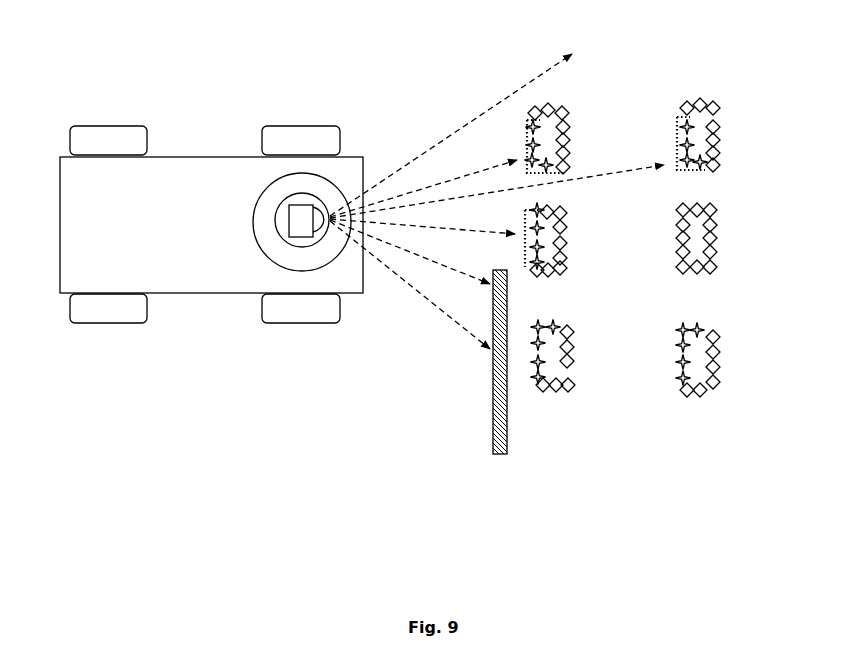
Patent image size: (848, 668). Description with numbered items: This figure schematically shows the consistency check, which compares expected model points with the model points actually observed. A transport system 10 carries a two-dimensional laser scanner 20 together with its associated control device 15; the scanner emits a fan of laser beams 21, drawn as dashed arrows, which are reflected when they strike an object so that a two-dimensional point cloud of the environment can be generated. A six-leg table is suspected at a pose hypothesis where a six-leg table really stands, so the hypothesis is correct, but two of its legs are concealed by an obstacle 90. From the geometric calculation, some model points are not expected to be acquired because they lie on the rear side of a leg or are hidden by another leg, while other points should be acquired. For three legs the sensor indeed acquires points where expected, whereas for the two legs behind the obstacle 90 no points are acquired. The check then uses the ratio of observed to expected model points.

The transport system 10 is at (97, 99).
The control device 15 is at (279, 247).
The 2D laser scanner 20 is at (295, 217).
The laser beams 21 is at (395, 167).
The obstacle 90 is at (492, 437).